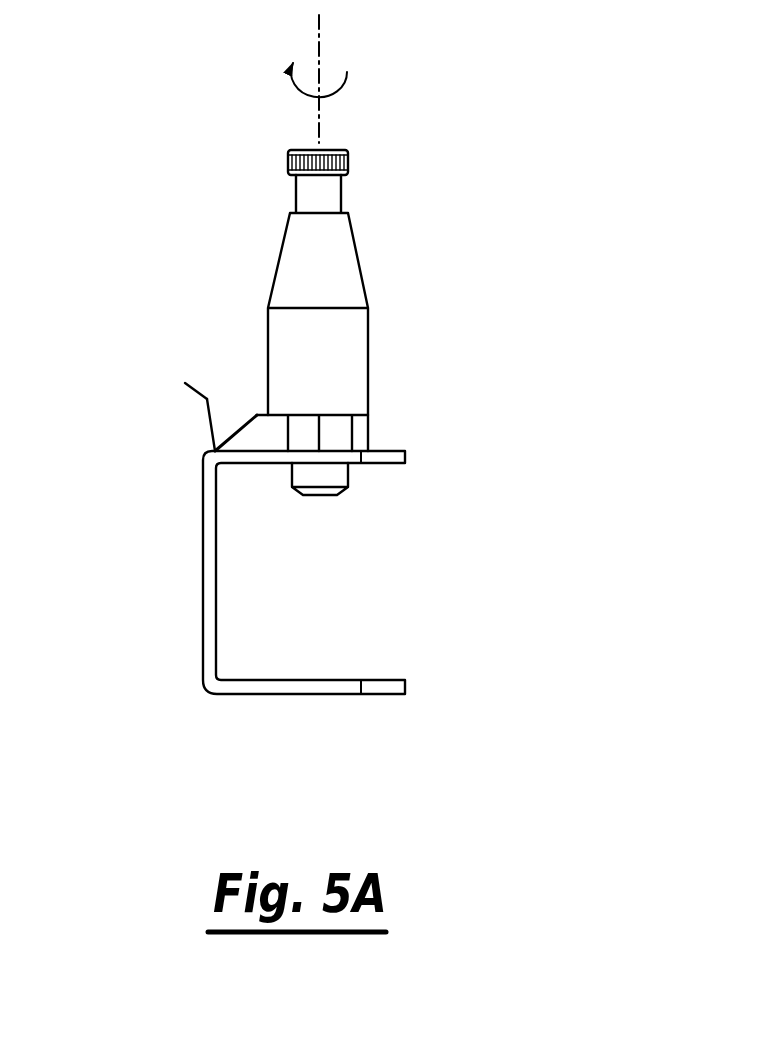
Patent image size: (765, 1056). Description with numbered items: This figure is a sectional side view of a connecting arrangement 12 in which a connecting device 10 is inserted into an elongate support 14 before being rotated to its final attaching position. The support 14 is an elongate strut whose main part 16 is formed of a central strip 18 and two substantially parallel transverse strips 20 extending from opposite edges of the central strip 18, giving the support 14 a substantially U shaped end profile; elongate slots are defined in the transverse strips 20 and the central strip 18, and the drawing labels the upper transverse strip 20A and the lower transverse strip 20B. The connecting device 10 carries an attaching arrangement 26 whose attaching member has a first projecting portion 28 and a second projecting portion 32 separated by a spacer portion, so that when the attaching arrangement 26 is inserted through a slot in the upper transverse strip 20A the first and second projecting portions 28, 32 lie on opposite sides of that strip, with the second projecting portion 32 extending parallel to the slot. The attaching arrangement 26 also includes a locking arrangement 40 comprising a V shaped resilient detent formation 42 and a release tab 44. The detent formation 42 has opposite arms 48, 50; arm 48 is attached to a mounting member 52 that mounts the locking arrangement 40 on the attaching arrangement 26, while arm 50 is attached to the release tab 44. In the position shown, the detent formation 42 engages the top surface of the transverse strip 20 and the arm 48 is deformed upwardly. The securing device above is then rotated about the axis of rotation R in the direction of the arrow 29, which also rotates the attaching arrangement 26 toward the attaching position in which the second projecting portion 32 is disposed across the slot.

The axis of rotation R is at (320, 43).
The arrow 29 is at (334, 93).
The connecting device 10 is at (372, 296).
The connecting arrangement 12 is at (466, 573).
The elongate support 14 is at (200, 614).
The main part 16 is at (265, 697).
The central strip 18 is at (203, 547).
The transverse strips 20 is at (378, 463).
The upper plate surface 20A is at (396, 451).
The lower plate surface 20B is at (258, 465).
The attaching arrangement 26 is at (376, 431).
The first projecting portion 28 is at (275, 432).
The second projecting portion 32 is at (319, 480).
The locking arrangement 40 is at (191, 398).
The detent formation 42 is at (205, 430).
The release tab 44 is at (116, 403).
The arm 48 is at (226, 425).
The arm 50 is at (208, 449).
The mounting member 52 is at (343, 413).